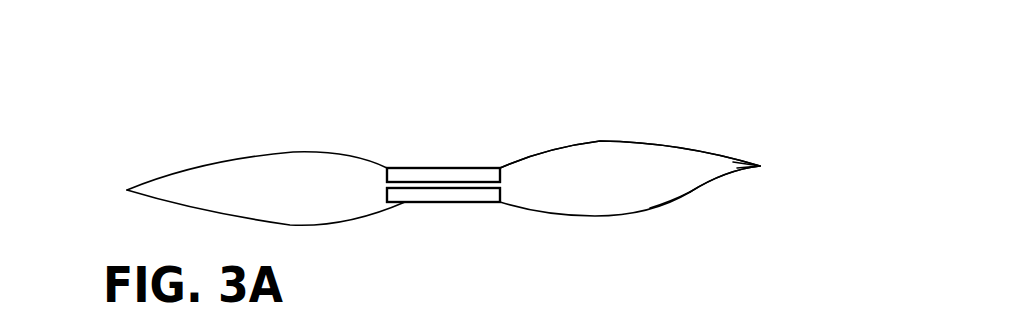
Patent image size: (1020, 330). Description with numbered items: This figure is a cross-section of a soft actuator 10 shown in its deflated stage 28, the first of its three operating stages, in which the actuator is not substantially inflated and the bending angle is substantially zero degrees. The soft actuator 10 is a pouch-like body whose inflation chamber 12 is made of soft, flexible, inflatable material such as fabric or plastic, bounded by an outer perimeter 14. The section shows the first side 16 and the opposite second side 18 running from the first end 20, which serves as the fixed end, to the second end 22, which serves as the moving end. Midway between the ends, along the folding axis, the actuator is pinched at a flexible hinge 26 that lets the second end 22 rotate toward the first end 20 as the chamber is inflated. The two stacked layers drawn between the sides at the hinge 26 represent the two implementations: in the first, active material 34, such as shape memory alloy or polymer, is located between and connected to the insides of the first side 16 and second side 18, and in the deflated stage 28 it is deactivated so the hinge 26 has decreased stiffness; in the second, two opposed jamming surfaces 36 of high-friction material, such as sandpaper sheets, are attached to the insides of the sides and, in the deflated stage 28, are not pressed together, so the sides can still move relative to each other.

The soft actuator 10 is at (733, 160).
The inflation chamber 12 is at (712, 178).
The outer perimeter 14 is at (677, 200).
The first side 16 is at (622, 140).
The second side 18 is at (588, 215).
The first end 20 is at (127, 190).
The second end 22 is at (737, 160).
The hinge 26 is at (435, 168).
The deflated stage 28 is at (231, 100).
The active material 34 is at (462, 168).
The jamming surfaces 36 is at (467, 202).